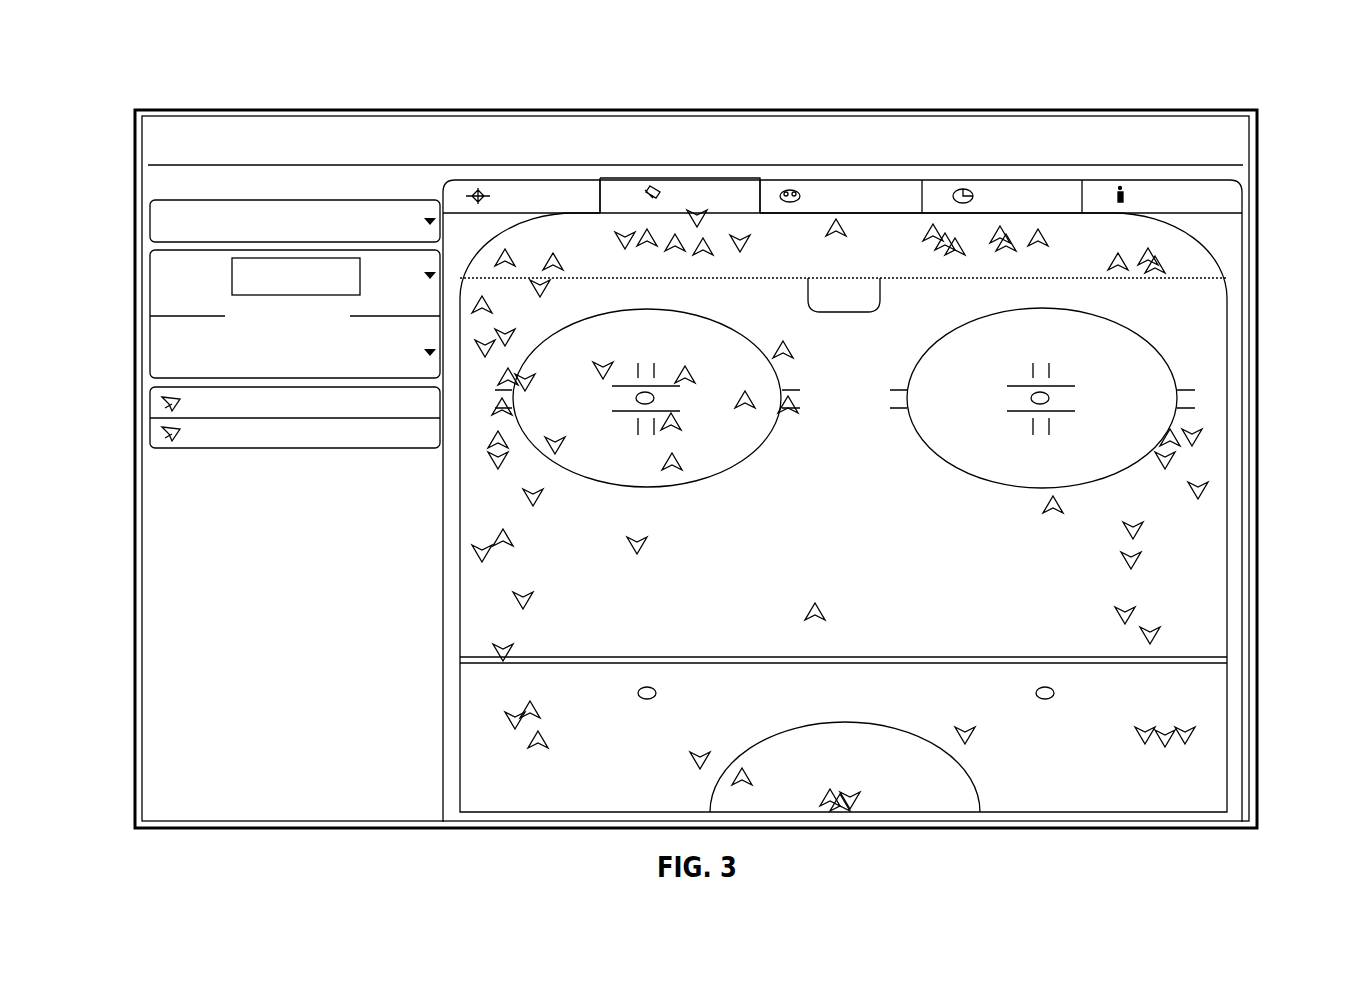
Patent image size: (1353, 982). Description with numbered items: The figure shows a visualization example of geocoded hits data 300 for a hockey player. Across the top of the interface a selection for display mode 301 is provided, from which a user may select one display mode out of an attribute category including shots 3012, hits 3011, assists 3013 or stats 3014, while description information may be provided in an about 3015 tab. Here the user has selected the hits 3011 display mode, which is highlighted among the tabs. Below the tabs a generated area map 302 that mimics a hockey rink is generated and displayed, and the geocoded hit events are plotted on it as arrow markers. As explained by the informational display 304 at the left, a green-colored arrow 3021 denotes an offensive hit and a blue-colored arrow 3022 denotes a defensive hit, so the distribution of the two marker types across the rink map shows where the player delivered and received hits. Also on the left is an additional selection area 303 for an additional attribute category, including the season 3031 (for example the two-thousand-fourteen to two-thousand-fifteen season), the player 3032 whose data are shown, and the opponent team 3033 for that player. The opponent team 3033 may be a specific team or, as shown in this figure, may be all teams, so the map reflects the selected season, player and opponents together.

The visualization example of geocoded hits data 300 is at (168, 50).
The selection for display mode 301 is at (908, 176).
The hits display mode 3011 is at (690, 178).
The shots display mode 3012 is at (527, 178).
The assists display mode 3013 is at (836, 178).
The stats display mode 3014 is at (1014, 178).
The about tab 3015 is at (1162, 178).
The generated area map 302 is at (1073, 235).
The green-colored arrow 3021 is at (1178, 272).
The blue-colored arrow 3022 is at (1213, 498).
The additional selection area 303 is at (384, 195).
The season 3031 is at (162, 222).
The player 1 3032 is at (225, 268).
The opponent team 3033 is at (219, 350).
The informational display 304 is at (306, 458).